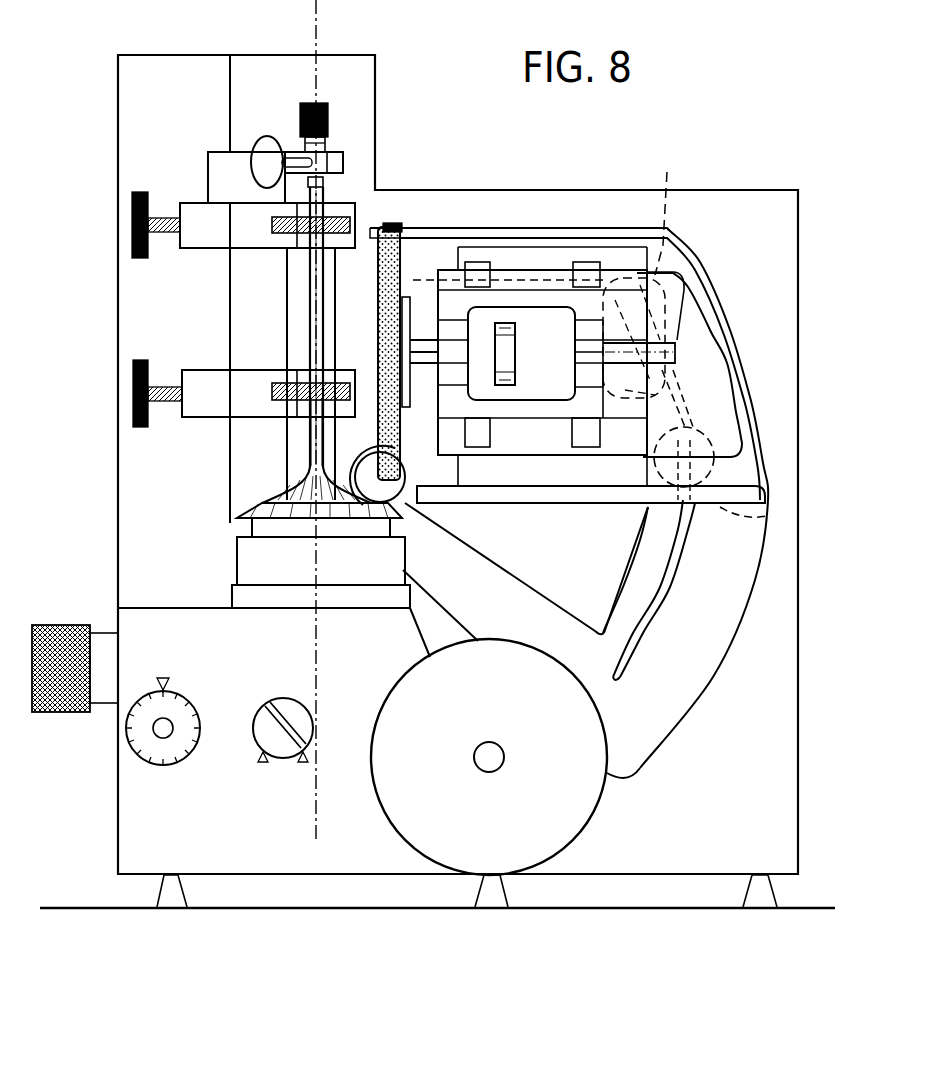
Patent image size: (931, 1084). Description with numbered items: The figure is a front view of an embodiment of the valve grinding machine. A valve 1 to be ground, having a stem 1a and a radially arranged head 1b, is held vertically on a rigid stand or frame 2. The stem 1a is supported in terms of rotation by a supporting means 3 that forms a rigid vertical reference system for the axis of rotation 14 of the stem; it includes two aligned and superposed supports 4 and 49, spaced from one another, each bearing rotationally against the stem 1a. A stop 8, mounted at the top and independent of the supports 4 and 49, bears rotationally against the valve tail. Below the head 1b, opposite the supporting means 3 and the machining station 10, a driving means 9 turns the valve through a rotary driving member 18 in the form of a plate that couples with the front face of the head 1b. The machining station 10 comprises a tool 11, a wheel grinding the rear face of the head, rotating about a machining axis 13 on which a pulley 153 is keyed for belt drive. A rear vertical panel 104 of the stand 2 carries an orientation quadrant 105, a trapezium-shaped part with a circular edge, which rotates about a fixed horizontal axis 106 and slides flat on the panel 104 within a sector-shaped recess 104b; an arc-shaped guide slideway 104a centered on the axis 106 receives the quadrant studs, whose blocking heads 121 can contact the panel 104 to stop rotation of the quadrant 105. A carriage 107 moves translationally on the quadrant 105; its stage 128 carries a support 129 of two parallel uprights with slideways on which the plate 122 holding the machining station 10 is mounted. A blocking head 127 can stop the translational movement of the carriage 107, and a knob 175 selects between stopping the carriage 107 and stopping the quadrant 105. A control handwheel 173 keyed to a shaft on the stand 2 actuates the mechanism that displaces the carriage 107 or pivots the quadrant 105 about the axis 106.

The valve 1 is at (310, 318).
The stem 1a is at (305, 445).
The head 1b is at (257, 500).
The stand 2 is at (722, 748).
The means for supporting the stem in terms of rotation 3 is at (250, 269).
The support 4 is at (220, 218).
The stop 8 is at (312, 148).
The means for driving the valve in rotation 9 is at (248, 555).
The machining station 10 is at (425, 338).
The tool 11 is at (392, 226).
The machining axis 13 is at (537, 335).
The axis of rotation 14 is at (316, 10).
The rotary driving member 18 is at (360, 533).
The support 49 is at (205, 398).
The rear vertical panel 104 is at (585, 207).
The guide slideway 104a is at (670, 573).
The recess 104b is at (637, 748).
The orientation quadrant 105 is at (738, 478).
The axis of orientation 106 is at (402, 500).
The carriage 107 is at (678, 333).
The blocking head 121 is at (770, 515).
The plate 122 is at (553, 412).
The blocking head 127 is at (622, 402).
The stage 128 is at (705, 407).
The support 129 is at (483, 268).
The pulley 153 is at (507, 387).
The control handwheel 173 is at (528, 822).
The knob 175 is at (283, 748).